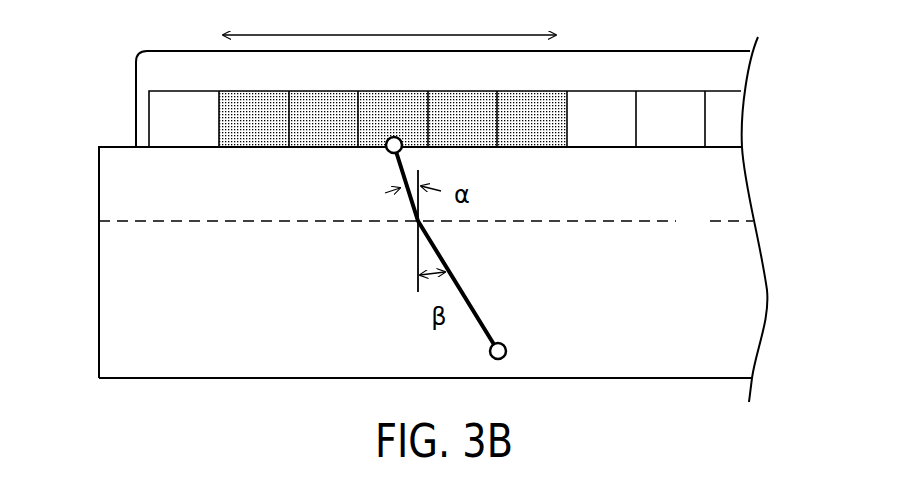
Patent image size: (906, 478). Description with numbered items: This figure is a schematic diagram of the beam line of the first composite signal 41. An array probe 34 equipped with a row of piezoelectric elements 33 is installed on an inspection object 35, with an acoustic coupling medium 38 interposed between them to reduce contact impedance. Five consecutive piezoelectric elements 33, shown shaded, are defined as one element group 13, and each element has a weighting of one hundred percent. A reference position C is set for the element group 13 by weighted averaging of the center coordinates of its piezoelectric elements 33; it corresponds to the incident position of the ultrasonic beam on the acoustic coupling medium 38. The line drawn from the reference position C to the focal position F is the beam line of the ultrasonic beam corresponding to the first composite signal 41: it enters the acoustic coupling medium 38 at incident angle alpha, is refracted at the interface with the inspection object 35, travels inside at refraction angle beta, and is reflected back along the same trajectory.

The element group 13 is at (389, 18).
The piezoelectric element 33 is at (670, 148).
The array probe 34 is at (136, 72).
The inspection object 35 is at (99, 262).
The acoustic coupling medium 38 is at (99, 181).
The first composite signal 41 is at (470, 302).
The reference position C is at (390, 137).
The focal position F is at (507, 350).